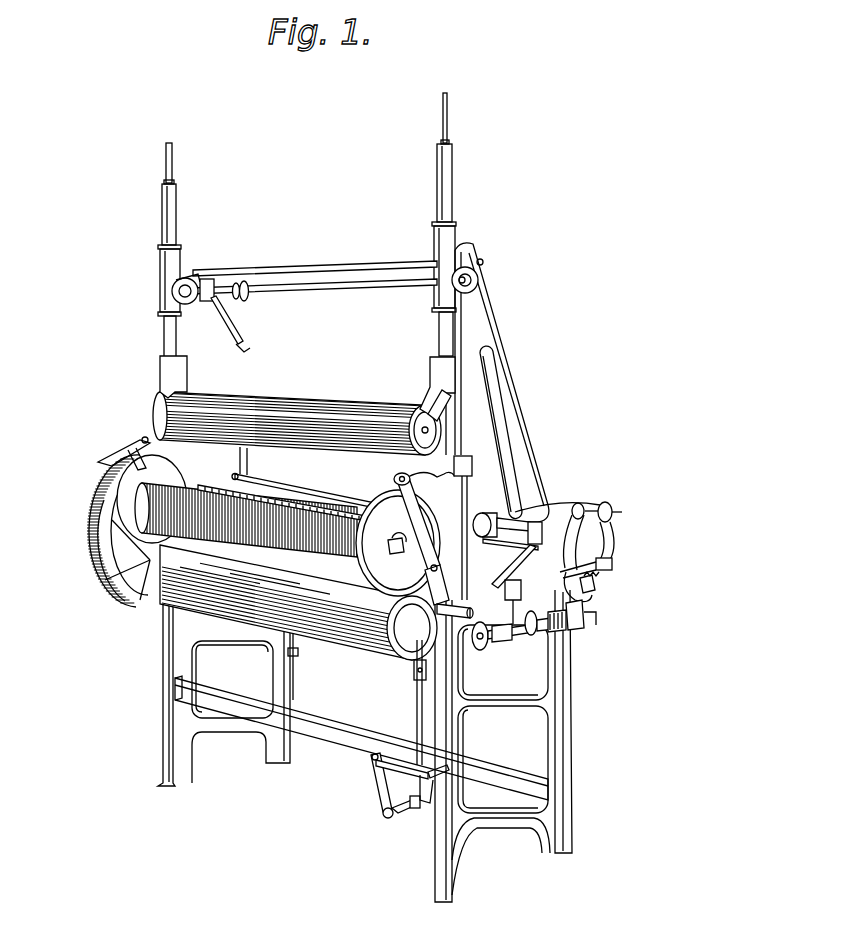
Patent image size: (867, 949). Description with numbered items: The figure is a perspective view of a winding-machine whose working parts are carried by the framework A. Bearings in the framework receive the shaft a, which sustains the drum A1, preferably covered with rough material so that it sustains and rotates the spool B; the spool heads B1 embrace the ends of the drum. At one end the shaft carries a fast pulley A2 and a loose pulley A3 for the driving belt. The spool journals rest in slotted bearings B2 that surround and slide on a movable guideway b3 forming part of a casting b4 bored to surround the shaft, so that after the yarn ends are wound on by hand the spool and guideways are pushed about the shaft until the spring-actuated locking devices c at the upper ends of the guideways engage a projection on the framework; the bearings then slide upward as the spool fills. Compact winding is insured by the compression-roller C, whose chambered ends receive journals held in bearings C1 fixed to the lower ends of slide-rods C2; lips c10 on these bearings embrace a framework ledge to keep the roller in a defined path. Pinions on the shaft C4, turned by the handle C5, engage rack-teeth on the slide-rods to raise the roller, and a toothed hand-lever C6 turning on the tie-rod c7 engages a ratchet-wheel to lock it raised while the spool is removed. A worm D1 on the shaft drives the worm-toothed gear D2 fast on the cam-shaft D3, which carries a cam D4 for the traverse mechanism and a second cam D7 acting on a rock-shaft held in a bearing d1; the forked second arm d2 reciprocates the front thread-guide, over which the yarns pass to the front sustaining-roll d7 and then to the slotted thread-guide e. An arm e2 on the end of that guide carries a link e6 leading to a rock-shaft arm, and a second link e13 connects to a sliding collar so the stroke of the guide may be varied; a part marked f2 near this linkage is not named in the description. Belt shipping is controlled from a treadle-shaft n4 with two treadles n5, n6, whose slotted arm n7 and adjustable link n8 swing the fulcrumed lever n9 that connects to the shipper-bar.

The framework A is at (162, 655).
The drum A1 is at (298, 602).
The fast pulley A2 is at (90, 545).
The loose pulley A3 is at (90, 580).
The spool B is at (96, 520).
The spool heads B1 is at (118, 493).
The bearings B2 is at (372, 566).
The movable guideway b3 is at (389, 549).
The casting b4 is at (376, 592).
The compression-roller C is at (297, 417).
The bearings C1 is at (421, 412).
The slide-rods C2 is at (545, 450).
The shaft C4 is at (186, 278).
The handle C5 is at (246, 283).
The hand-lever C6 is at (210, 279).
The tie-rod c7 is at (315, 262).
The lips c10 is at (162, 362).
The locking devices c is at (136, 448).
The shaft a is at (440, 618).
The worm D1 is at (412, 668).
The worm-toothed gear D2 is at (482, 650).
The cam-shaft D3 is at (552, 638).
The cam D4 is at (520, 642).
The second cam D7 is at (584, 625).
The bearing d1 is at (598, 566).
The second arm d2 is at (610, 530).
The front sustaining-roll d7 is at (548, 505).
The thread-guide e is at (484, 513).
The arm e2 is at (588, 504).
The link e6 is at (493, 562).
The second link e13 is at (600, 506).
The crank disc f2 is at (614, 515).
The treadle-shaft n4 is at (402, 812).
The treadle n5 is at (485, 795).
The treadle n6 is at (423, 804).
The arm n7 is at (380, 790).
The link n8 is at (372, 763).
The lever n9 is at (415, 695).